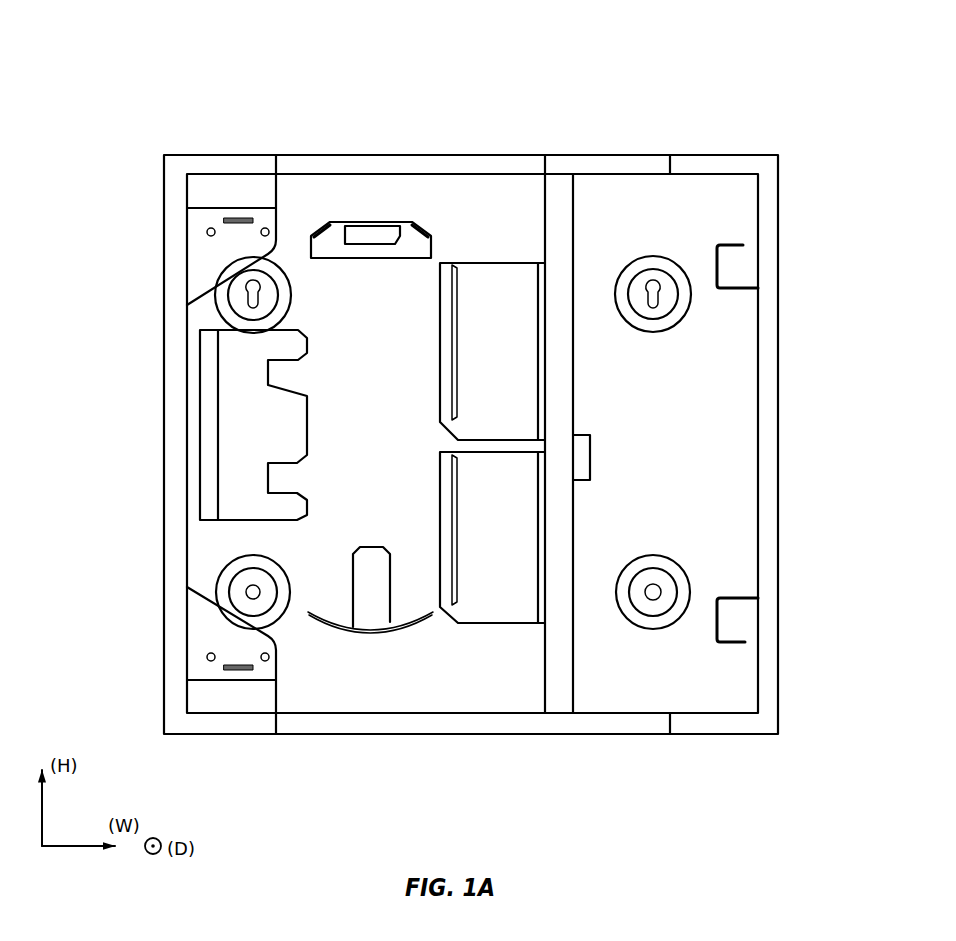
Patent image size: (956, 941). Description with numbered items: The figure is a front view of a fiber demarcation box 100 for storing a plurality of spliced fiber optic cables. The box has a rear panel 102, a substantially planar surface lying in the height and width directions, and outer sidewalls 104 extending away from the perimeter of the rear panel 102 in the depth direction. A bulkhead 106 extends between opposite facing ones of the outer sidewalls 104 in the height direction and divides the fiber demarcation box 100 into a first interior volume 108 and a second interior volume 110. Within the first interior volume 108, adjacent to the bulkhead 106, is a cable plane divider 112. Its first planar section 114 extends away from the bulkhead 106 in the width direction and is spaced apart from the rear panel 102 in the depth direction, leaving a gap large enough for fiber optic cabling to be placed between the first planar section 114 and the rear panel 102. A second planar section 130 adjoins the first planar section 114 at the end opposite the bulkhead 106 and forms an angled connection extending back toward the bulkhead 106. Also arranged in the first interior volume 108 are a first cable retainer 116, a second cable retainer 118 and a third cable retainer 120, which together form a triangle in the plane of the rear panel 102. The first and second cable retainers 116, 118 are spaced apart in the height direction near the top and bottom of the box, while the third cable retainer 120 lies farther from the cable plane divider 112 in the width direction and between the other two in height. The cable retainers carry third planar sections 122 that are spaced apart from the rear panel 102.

The fiber demarcation box 100 is at (350, 90).
The rear panel 102 is at (371, 245).
The outer sidewalls 104 is at (448, 155).
The bulkhead 106 is at (558, 205).
The first interior volume 108 is at (190, 412).
The second interior volume 110 is at (638, 202).
The cable plane divider 112 is at (449, 424).
The first planar section 114 is at (517, 277).
The first cable retainer 116 is at (380, 265).
The second cable retainer 118 is at (353, 540).
The third cable retainer 120 is at (203, 320).
The third planar sections 122 is at (243, 442).
The second planar section 130 is at (442, 328).